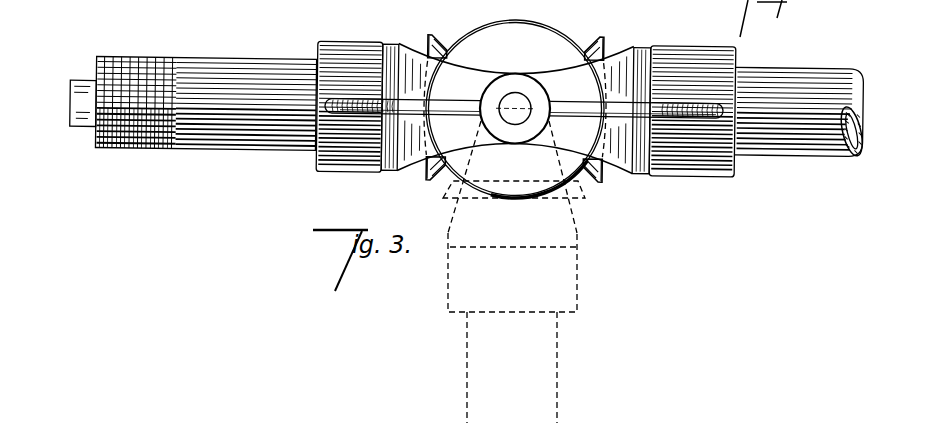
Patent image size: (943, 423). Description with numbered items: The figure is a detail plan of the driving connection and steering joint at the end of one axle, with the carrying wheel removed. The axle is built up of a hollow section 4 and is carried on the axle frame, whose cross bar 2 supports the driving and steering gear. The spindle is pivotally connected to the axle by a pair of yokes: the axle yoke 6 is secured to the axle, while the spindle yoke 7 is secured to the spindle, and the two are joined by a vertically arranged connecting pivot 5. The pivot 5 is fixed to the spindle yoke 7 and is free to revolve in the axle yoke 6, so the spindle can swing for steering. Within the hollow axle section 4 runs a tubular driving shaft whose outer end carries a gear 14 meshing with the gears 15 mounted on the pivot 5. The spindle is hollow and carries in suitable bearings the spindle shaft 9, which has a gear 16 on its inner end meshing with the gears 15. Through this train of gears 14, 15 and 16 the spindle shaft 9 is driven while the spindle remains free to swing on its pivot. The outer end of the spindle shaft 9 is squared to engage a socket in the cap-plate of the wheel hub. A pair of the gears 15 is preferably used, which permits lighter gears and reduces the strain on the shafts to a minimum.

The cross bar 2 is at (62, 140).
The hollow section 4 is at (786, 64).
The connecting pivot 5 is at (522, 100).
The axle yoke 6 is at (571, 81).
The spindle yoke 7 is at (407, 72).
The spindle shaft 9 is at (233, 64).
The gear 14 is at (606, 41).
The gear 15 is at (519, 21).
The gear 16 is at (440, 37).